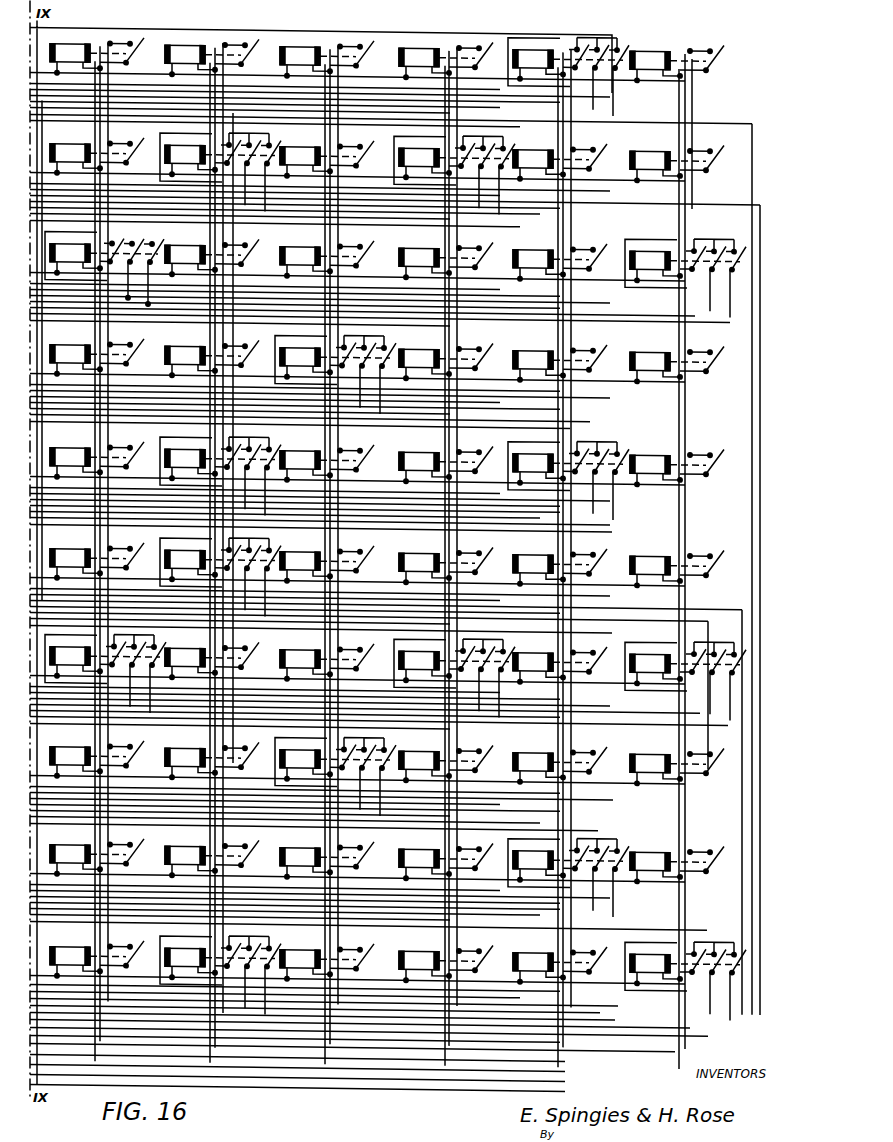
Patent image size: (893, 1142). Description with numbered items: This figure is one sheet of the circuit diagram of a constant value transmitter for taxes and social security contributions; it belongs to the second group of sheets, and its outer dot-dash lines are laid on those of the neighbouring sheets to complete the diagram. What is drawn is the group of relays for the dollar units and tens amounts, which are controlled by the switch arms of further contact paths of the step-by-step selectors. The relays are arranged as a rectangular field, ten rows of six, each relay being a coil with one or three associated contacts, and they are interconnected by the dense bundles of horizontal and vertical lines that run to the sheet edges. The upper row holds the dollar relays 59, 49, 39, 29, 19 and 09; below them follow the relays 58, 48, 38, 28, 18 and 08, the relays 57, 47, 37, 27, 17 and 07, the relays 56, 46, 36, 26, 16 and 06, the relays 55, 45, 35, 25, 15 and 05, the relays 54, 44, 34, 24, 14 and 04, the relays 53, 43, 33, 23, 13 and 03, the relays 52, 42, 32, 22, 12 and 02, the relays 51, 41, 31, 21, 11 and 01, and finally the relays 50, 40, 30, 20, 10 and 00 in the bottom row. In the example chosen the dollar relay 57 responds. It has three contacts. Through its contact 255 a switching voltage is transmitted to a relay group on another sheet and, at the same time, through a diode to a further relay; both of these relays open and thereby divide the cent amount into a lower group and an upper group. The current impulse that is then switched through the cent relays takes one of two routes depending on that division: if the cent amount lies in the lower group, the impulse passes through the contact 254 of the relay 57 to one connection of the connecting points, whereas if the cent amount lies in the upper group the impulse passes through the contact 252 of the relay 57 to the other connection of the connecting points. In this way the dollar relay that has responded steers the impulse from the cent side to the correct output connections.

The dollar amount relay 00 is at (652, 958).
The dollar amount relay 01 is at (648, 850).
The dollar amount relay 02 is at (648, 752).
The dollar amount relay 03 is at (648, 650).
The dollar amount relay 04 is at (648, 554).
The dollar amount relay 05 is at (648, 453).
The dollar amount relay 06 is at (648, 350).
The dollar amount relay 07 is at (648, 248).
The dollar amount relay 08 is at (648, 149).
The dollar amount relay 09 is at (648, 49).
The dollar amount relay 10 is at (531, 952).
The dollar amount relay 11 is at (533, 846).
The dollar amount relay 12 is at (531, 752).
The dollar amount relay 13 is at (531, 652).
The dollar amount relay 14 is at (531, 554).
The dollar amount relay 15 is at (533, 449).
The dollar amount relay 16 is at (531, 350).
The dollar amount relay 17 is at (531, 249).
The dollar amount relay 18 is at (531, 149).
The dollar amount relay 19 is at (533, 56).
The dollar amount relay 20 is at (417, 952).
The dollar amount relay 21 is at (417, 850).
The dollar amount relay 22 is at (417, 752).
The dollar amount relay 23 is at (419, 648).
The dollar amount relay 24 is at (417, 554).
The dollar amount relay 25 is at (417, 453).
The dollar amount relay 26 is at (417, 350).
The dollar amount relay 27 is at (417, 249).
The dollar amount relay 28 is at (419, 145).
The dollar amount relay 29 is at (417, 49).
The dollar amount relay 30 is at (298, 952).
The dollar amount relay 31 is at (298, 850).
The dollar amount relay 32 is at (300, 748).
The dollar amount relay 33 is at (298, 652).
The dollar amount relay 34 is at (298, 554).
The dollar amount relay 35 is at (298, 453).
The dollar amount relay 36 is at (300, 346).
The dollar amount relay 37 is at (298, 249).
The dollar amount relay 38 is at (298, 149).
The dollar amount relay 39 is at (298, 49).
The dollar amount relay 40 is at (185, 948).
The dollar amount relay 41 is at (183, 850).
The dollar amount relay 42 is at (183, 752).
The dollar amount relay 43 is at (183, 652).
The dollar amount relay 44 is at (188, 560).
The dollar amount relay 45 is at (185, 449).
The dollar amount relay 46 is at (183, 350).
The dollar amount relay 47 is at (183, 249).
The dollar amount relay 48 is at (185, 145).
The dollar amount relay 49 is at (183, 49).
The dollar amount relay 50 is at (68, 952).
The dollar amount relay 51 is at (68, 850).
The dollar amount relay 52 is at (68, 752).
The dollar amount relay 53 is at (70, 648).
The dollar amount relay 54 is at (68, 554).
The dollar amount relay 55 is at (68, 453).
The dollar amount relay 56 is at (68, 350).
The dollar relay 57 is at (115, 254).
The dollar amount relay 58 is at (68, 149).
The dollar amount relay 59 is at (68, 49).
The contact of relay 57 252 is at (154, 244).
The contact of relay 57 254 is at (110, 240).
The contact of relay 57 255 is at (132, 241).